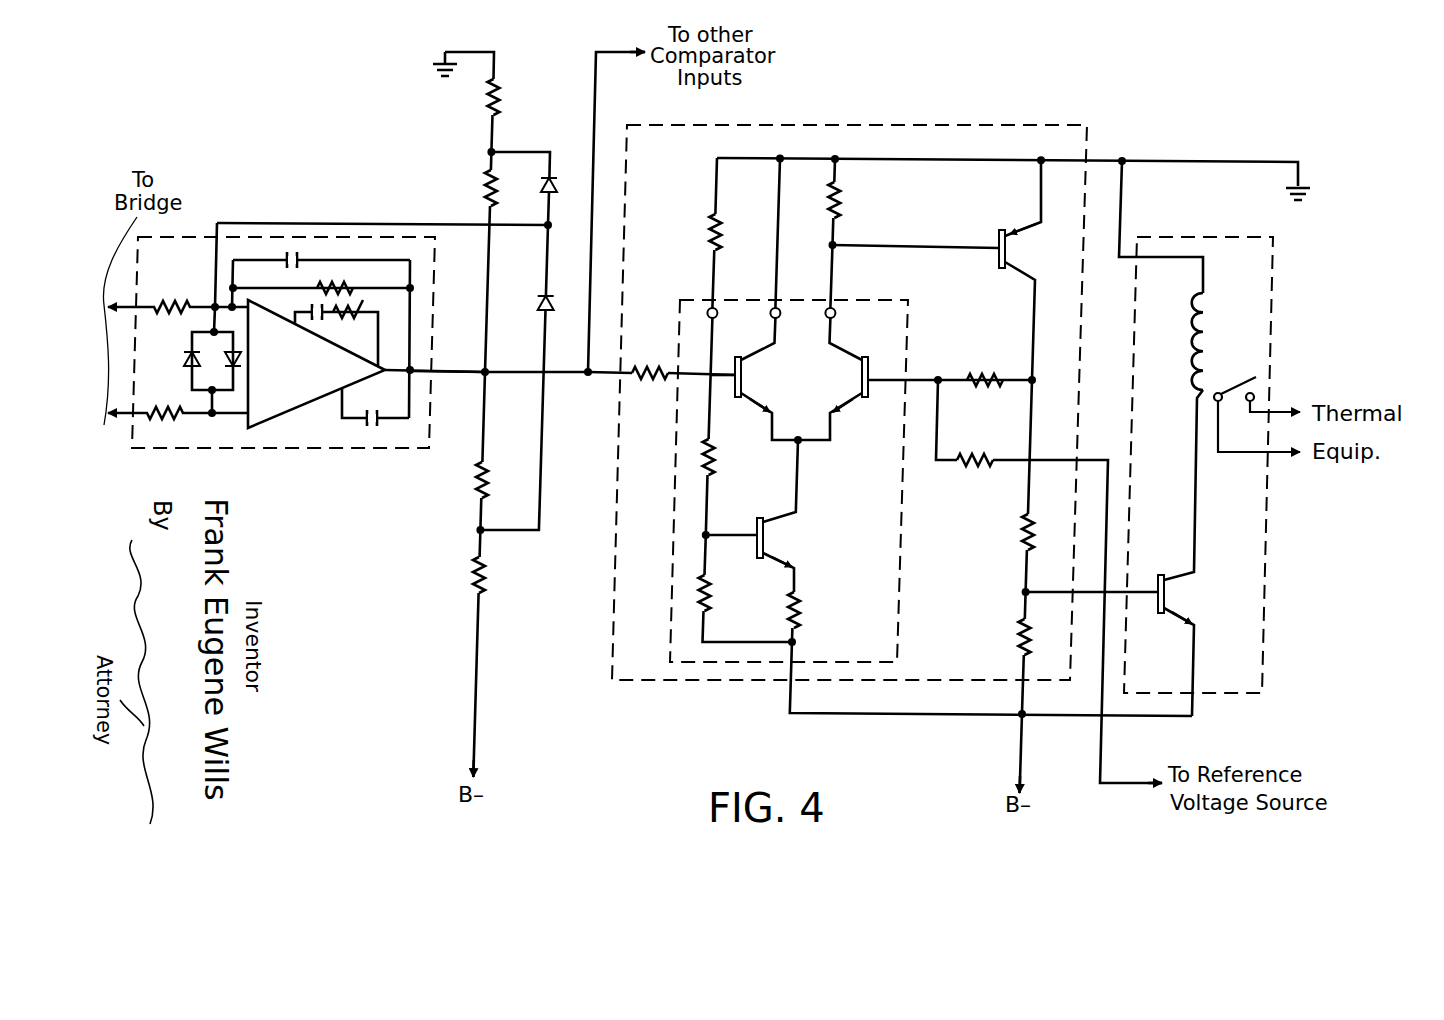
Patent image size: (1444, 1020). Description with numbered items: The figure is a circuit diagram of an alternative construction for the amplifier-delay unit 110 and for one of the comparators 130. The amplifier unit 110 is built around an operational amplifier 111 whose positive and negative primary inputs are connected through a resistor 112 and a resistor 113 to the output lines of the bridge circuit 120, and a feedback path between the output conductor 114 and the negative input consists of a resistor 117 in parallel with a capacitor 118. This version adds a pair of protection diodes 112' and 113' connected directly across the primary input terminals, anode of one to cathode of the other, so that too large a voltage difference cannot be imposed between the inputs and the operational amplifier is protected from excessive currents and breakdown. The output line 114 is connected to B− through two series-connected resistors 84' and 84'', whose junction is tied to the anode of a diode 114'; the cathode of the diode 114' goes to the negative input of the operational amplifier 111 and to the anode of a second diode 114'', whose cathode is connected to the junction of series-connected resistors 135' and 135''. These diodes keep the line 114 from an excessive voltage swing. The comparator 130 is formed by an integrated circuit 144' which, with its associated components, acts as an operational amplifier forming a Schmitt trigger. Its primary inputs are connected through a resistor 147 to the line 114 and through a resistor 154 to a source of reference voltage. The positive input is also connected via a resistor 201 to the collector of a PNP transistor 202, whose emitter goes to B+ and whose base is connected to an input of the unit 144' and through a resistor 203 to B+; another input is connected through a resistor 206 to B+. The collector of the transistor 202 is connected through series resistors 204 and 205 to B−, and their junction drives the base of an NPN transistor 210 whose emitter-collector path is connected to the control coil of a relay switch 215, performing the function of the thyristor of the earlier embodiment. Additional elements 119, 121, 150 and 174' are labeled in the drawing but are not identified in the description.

The amplifier-delay unit 110 is at (199, 230).
The operational amplifier 111 is at (274, 414).
The resistor 112 is at (178, 422).
The protection diode 112' is at (188, 361).
The resistor 113 is at (178, 295).
The protection diode 113' is at (175, 355).
The output line 114 is at (447, 354).
The diode 114' is at (525, 281).
The diode 114'' is at (568, 155).
The feedback resistor 117 is at (335, 282).
The feedback capacitor 118 is at (292, 252).
The capacitor 119 is at (372, 420).
The bridge circuit 120 is at (352, 306).
The capacitor 121 is at (311, 304).
The comparator circuit 130 is at (1027, 122).
The resistor 135' is at (475, 188).
The resistor 135'' is at (520, 97).
The integrated circuit 144' is at (828, 476).
The resistor 147 is at (652, 361).
The switch 150 is at (1290, 246).
The resistor 154 is at (975, 449).
The relay switch unit 174' is at (1303, 654).
The resistor 201 is at (986, 370).
The PNP transistor 202 is at (998, 238).
The resistor 203 is at (855, 200).
The resistor 204 is at (1005, 532).
The resistor 205 is at (1002, 637).
The resistor 206 is at (694, 232).
The NPN transistor 210 is at (1176, 597).
The relay switch 215 is at (1218, 334).
The resistor 84' is at (500, 480).
The resistor 84'' is at (498, 575).